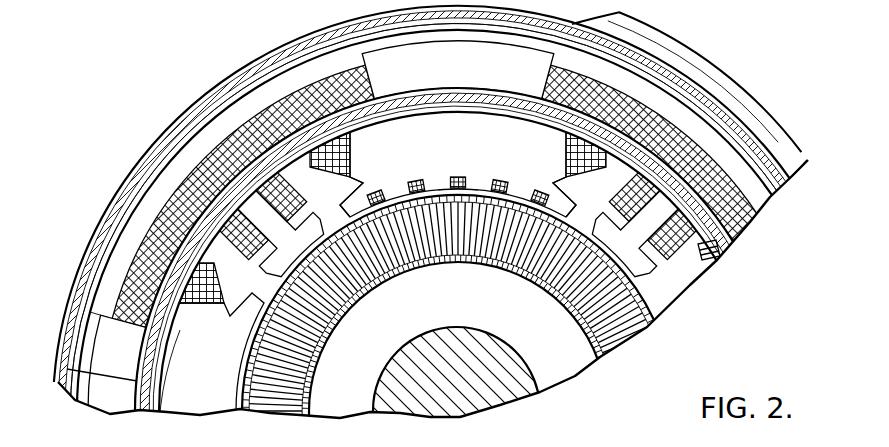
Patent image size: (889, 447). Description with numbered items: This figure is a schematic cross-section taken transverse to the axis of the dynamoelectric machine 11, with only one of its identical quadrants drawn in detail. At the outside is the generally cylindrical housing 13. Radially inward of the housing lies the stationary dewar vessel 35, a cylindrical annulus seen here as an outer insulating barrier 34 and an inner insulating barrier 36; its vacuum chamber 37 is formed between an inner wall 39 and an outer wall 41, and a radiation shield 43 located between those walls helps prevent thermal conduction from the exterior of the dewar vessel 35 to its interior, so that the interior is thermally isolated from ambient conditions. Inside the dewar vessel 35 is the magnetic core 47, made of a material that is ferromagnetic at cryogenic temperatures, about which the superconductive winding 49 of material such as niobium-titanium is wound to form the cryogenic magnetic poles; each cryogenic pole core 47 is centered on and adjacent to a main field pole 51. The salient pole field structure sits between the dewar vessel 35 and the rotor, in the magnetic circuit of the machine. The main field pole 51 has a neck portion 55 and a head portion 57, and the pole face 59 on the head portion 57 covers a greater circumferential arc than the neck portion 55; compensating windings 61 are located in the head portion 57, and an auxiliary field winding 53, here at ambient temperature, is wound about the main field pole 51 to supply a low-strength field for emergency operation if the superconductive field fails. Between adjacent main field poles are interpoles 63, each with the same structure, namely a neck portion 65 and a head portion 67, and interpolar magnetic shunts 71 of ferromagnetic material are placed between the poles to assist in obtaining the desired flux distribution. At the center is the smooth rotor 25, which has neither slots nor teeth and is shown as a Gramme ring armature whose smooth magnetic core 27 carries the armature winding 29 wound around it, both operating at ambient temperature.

The dynamoelectric machine 11 is at (176, 113).
The housing 13 is at (746, 72).
The smooth rotor 25 is at (567, 309).
The magnetic core 27 is at (641, 331).
The armature winding 29 is at (627, 340).
The outer insulating barrier 34 is at (300, 48).
The stationary dewar vessel 35 is at (170, 332).
The inner insulating barrier 36 is at (440, 108).
The vacuum chamber 37 is at (227, 97).
The inner wall 39 is at (92, 299).
The outer wall 41 is at (60, 339).
The radiation shield 43 is at (157, 365).
The magnetic core 47 is at (377, 43).
The superconductive winding 49 is at (167, 217).
The main field pole 51 is at (522, 185).
The auxiliary field winding 53 is at (307, 150).
The neck portion 55 is at (547, 140).
The head portion 57 is at (352, 186).
The pole face 59 is at (486, 193).
The compensating windings 61 is at (500, 180).
The interpole 63 is at (617, 216).
The neck portion 65 is at (700, 153).
The head portion 67 is at (640, 263).
The interpolar magnetic shunt 71 is at (720, 250).